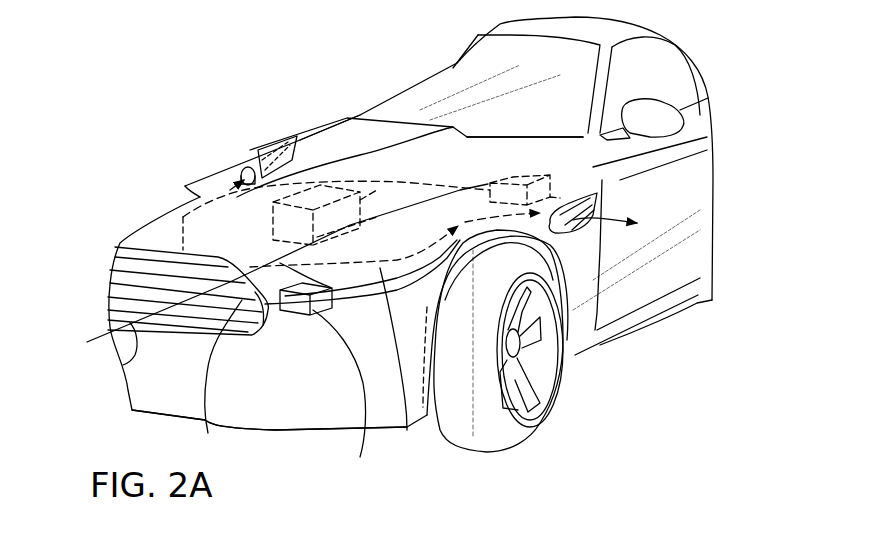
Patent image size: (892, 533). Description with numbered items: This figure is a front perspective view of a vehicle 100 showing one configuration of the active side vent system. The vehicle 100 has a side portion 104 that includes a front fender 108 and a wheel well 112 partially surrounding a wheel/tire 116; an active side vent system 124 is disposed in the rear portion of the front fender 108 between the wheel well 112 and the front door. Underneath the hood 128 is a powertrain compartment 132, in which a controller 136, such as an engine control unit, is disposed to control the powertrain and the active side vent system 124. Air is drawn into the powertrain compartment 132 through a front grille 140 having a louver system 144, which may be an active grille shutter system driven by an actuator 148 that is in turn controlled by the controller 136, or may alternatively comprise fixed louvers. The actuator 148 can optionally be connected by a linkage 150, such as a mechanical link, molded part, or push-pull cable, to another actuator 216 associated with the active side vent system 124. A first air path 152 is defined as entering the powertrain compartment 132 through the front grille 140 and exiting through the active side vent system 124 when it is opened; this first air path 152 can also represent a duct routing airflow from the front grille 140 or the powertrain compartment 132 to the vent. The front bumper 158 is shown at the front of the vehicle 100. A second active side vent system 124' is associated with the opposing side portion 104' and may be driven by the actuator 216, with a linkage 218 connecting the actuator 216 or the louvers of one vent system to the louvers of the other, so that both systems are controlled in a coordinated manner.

The vehicle 100 is at (125, 82).
The side portion 104 is at (673, 267).
The opposing side portion 104' is at (284, 218).
The front fender 108 is at (707, 137).
The wheel well 112 is at (523, 240).
The wheel/tire 116 is at (547, 415).
The active side vent system 124 is at (636, 272).
The second active side vent system 124' is at (244, 177).
The hood 128 is at (297, 140).
The powertrain compartment 132 is at (340, 152).
The controller 136 is at (247, 167).
The front grille 140 is at (133, 267).
The louver system 144 is at (216, 378).
The actuator 148 is at (346, 392).
The linkage 150 is at (400, 361).
The first air path 152 is at (183, 217).
The front bumper 158 is at (290, 397).
The actuator 216 is at (512, 176).
The linkage 218 is at (421, 187).